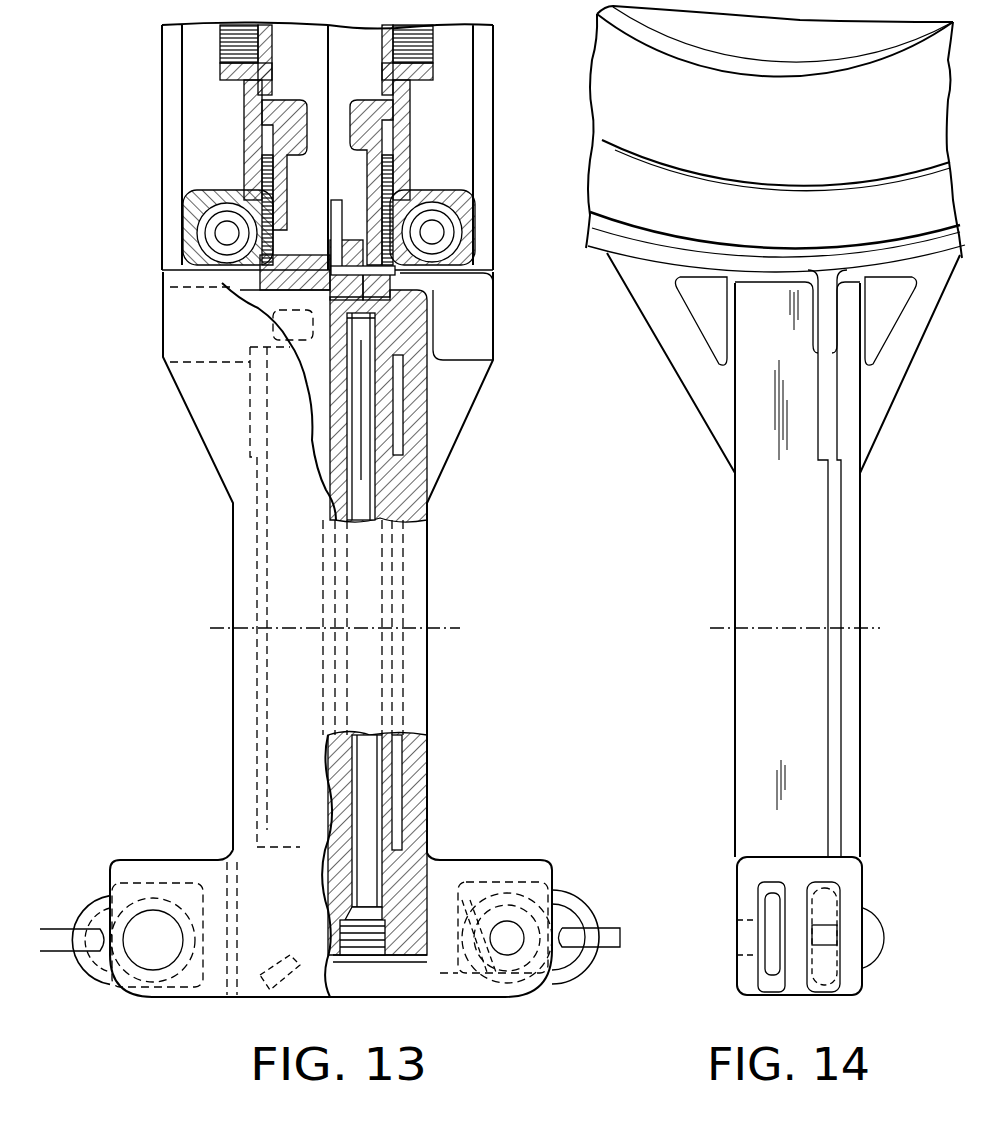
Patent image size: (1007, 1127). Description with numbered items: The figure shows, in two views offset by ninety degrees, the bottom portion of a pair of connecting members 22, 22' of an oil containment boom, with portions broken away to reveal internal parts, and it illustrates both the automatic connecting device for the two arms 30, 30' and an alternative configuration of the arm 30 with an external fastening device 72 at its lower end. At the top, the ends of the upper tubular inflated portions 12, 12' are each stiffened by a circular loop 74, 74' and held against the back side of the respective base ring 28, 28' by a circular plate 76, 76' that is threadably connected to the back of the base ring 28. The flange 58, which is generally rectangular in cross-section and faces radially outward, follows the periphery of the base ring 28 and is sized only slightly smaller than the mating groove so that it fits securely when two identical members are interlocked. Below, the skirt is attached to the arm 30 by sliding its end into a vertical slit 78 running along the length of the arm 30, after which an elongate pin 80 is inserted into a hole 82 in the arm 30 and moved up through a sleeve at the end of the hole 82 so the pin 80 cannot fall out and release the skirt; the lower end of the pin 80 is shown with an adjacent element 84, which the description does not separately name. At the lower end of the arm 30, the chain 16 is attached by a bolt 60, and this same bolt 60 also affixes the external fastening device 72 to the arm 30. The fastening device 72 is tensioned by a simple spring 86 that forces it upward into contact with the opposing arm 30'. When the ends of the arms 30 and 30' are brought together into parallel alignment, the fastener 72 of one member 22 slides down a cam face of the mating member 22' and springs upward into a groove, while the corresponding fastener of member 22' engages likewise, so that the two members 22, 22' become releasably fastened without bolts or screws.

In FIG. 13, the upper tubular inflated portion 12 is at (460, 228).
In FIG. 13, the upper tubular inflated portion of the second connecting member 12' is at (188, 230).
In FIG. 14, the chain 16 is at (830, 975).
In FIG. 13, the connecting member 22 is at (436, 147).
In FIG. 13, the second connecting member 22' is at (191, 147).
In FIG. 13, the base ring 28 is at (401, 182).
In FIG. 13, the base ring of the second connecting member 28' is at (294, 165).
In FIG. 13, the arm 30 is at (357, 562).
In FIG. 14, the arm 30 is at (776, 570).
In FIG. 13, the arm of the second connecting member 30' is at (241, 561).
In FIG. 13, the flange 58 is at (340, 252).
In FIG. 13, the bolt 60 is at (520, 925).
In FIG. 14, the bolt 60 is at (878, 938).
In FIG. 13, the external fastening device 72 is at (500, 965).
In FIG. 14, the external fastening device 72 is at (775, 940).
In FIG. 13, the circular loop 74 is at (466, 232).
In FIG. 13, the circular loop of the second connecting member 74' is at (180, 233).
In FIG. 13, the circular plate 76 is at (463, 112).
In FIG. 13, the circular plate of the second connecting member 76' is at (229, 145).
In FIG. 14, the vertical slit 78 is at (835, 535).
In FIG. 13, the elongate pin 80 is at (365, 765).
In FIG. 13, the hole 82 is at (340, 905).
In FIG. 13, the nut 84 is at (340, 935).
In FIG. 13, the spring 86 is at (468, 915).
In FIG. 14, the spring 86 is at (760, 900).